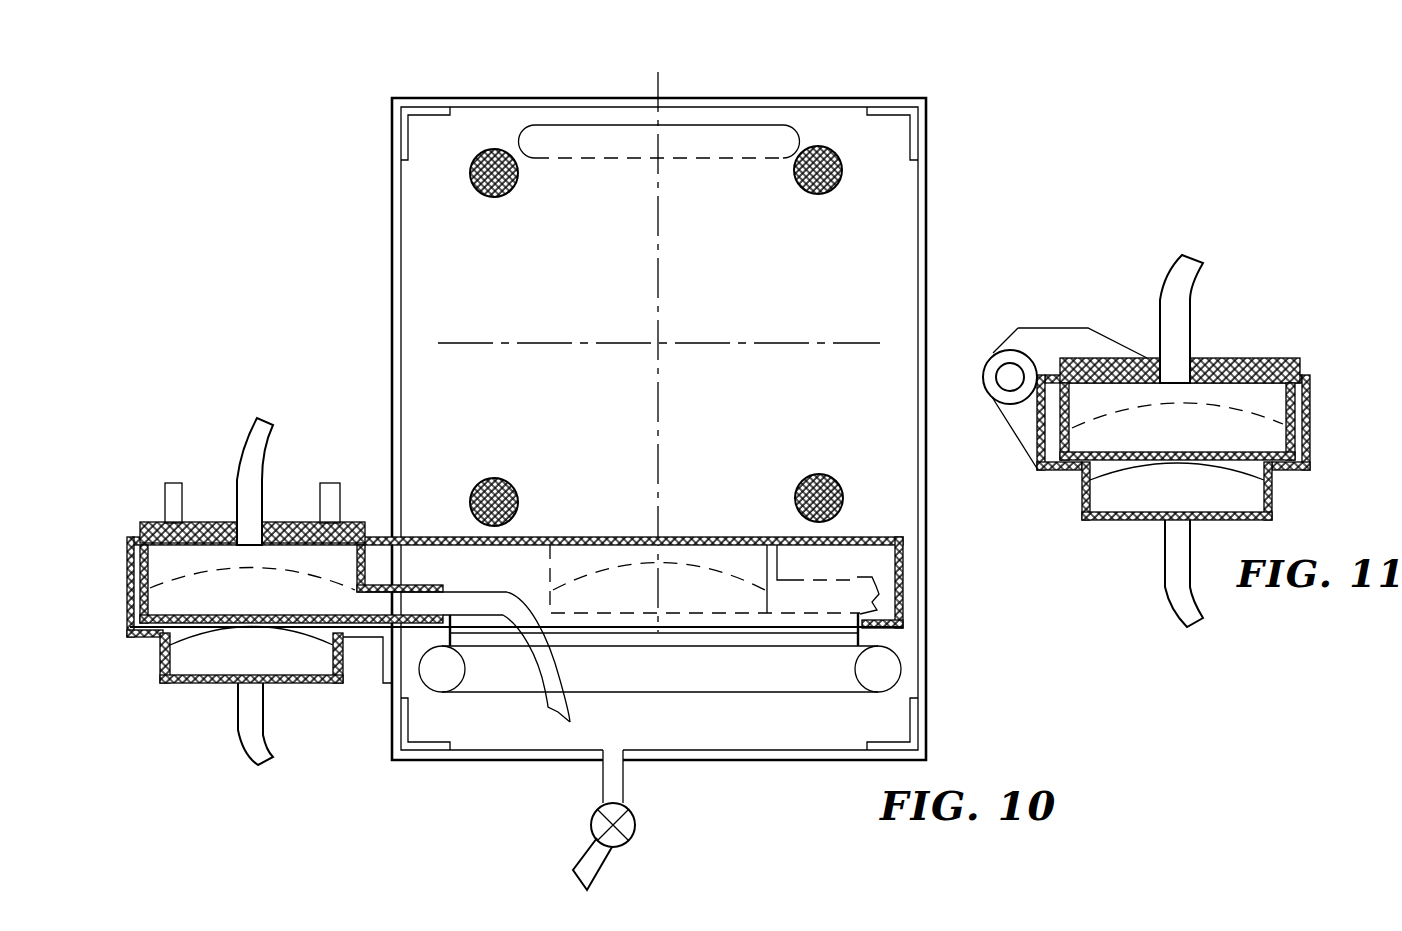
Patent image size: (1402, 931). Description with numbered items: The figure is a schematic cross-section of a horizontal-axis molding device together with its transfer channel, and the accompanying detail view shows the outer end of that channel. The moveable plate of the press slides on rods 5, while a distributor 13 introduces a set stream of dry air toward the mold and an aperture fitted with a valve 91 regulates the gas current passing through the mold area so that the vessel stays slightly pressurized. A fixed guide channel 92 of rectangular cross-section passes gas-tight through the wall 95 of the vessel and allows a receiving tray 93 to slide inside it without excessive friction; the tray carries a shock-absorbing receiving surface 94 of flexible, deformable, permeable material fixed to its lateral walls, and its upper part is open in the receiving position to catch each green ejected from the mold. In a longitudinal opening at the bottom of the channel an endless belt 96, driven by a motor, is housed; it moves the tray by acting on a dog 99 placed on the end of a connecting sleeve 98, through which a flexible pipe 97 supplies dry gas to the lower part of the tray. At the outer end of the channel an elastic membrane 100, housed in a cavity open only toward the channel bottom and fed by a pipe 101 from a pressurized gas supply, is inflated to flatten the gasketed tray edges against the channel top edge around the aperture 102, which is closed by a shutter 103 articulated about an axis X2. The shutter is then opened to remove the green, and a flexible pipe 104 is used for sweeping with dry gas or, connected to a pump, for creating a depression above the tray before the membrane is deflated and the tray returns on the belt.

In FIG. 10, the rods 5 is at (828, 195).
In FIG. 10, the distributor 13 is at (764, 122).
In FIG. 10, the valve 91 is at (631, 840).
In FIG. 10, the guide channel 92 is at (546, 536).
In FIG. 10, the receiving tray 93 is at (680, 538).
In FIG. 11, the receiving tray 93 is at (1282, 400).
In FIG. 10, the receiving surface 94 is at (733, 578).
In FIG. 10, the wall 95 is at (390, 395).
In FIG. 10, the endless belt 96 is at (773, 693).
In FIG. 10, the flexible pipe 97 is at (561, 728).
In FIG. 10, the connecting sleeve 98 is at (435, 585).
In FIG. 10, the dog 99 is at (456, 645).
In FIG. 10, the elastic membrane 100 is at (170, 650).
In FIG. 11, the elastic membrane 100 is at (1108, 500).
In FIG. 10, the pipe 101 is at (238, 745).
In FIG. 11, the pipe 101 is at (1172, 612).
In FIG. 11, the aperture 102 is at (1097, 382).
In FIG. 11, the shutter 103 is at (1296, 355).
In FIG. 10, the flexible pipe 104 is at (233, 433).
In FIG. 11, the flexible pipe 104 is at (1195, 330).
In FIG. 11, the axis X2 is at (1003, 367).